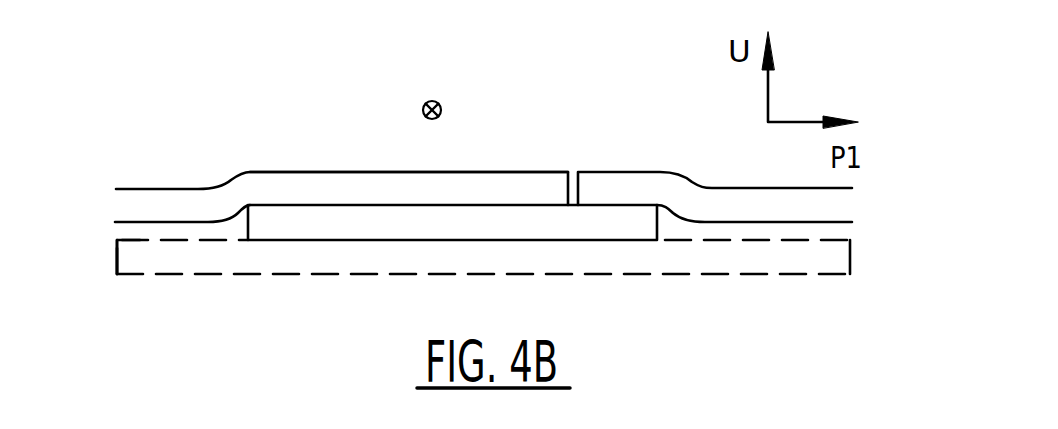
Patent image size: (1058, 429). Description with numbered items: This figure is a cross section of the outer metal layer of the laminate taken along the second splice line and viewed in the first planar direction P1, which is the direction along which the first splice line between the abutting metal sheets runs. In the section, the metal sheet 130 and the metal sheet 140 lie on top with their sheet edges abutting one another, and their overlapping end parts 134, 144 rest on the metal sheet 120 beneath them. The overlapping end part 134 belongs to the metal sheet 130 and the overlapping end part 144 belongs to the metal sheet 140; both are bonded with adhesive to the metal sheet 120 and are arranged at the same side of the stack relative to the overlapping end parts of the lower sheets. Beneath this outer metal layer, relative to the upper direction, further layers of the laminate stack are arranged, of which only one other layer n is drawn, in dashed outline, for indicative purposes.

The metal sheet 130 is at (202, 168).
The overlapping end part 134 is at (401, 183).
The overlapping end part 144 is at (613, 185).
The metal sheet 120 is at (572, 220).
The metal sheet 140 is at (763, 245).
The other layer n is at (158, 253).
The first planar direction P1 is at (441, 109).